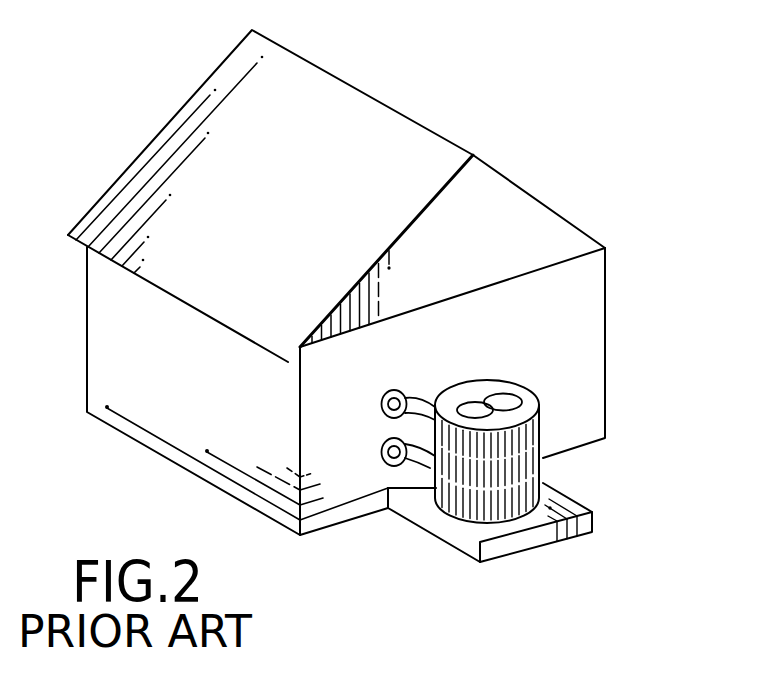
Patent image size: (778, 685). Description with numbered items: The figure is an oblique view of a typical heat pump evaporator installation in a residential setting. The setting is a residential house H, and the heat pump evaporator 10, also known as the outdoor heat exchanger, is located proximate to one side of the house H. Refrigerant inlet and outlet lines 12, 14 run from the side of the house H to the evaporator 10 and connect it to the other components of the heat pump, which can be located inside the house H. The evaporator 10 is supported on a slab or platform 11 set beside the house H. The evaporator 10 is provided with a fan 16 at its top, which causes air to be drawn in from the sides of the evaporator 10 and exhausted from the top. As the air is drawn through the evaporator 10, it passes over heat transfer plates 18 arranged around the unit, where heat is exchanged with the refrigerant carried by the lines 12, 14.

The house H is at (608, 337).
The heat pump evaporator 10 is at (529, 405).
The slab or platform 11 is at (565, 533).
The refrigerant inlet line 12 is at (418, 398).
The refrigerant outlet line 14 is at (407, 468).
The fan 16 is at (472, 400).
The heat transfer plates 18 is at (538, 470).